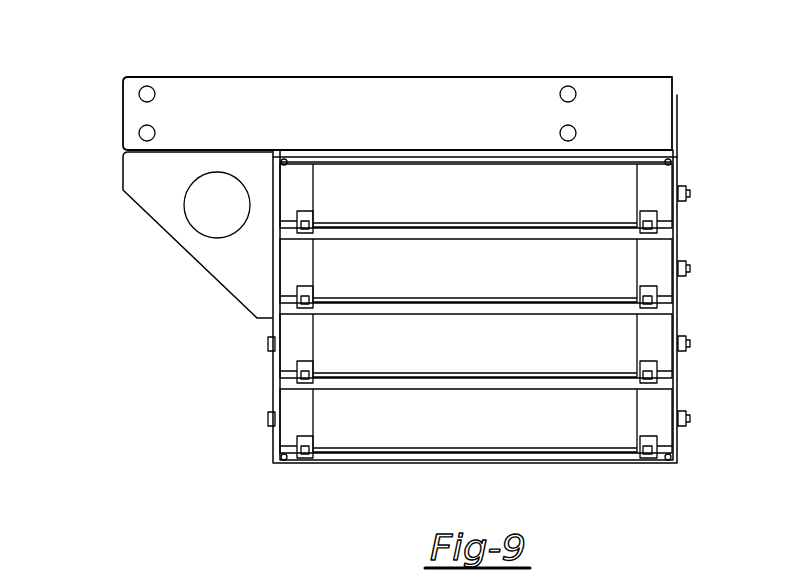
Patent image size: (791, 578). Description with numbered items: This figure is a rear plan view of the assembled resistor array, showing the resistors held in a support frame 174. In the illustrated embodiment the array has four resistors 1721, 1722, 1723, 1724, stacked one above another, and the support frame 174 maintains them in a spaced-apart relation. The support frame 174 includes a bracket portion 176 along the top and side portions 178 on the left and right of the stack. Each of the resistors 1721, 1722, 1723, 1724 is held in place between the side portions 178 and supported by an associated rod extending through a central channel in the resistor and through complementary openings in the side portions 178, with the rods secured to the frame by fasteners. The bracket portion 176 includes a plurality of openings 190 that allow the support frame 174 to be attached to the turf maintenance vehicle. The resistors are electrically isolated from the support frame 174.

The first resistor 1721 is at (628, 180).
The second resistor 1722 is at (628, 255).
The third resistor 1723 is at (628, 330).
The fourth resistor 1724 is at (628, 405).
The support frame 174 is at (70, 130).
The bracket portion 176 is at (397, 85).
The side portions 178 is at (275, 376).
The openings 190 is at (577, 90).